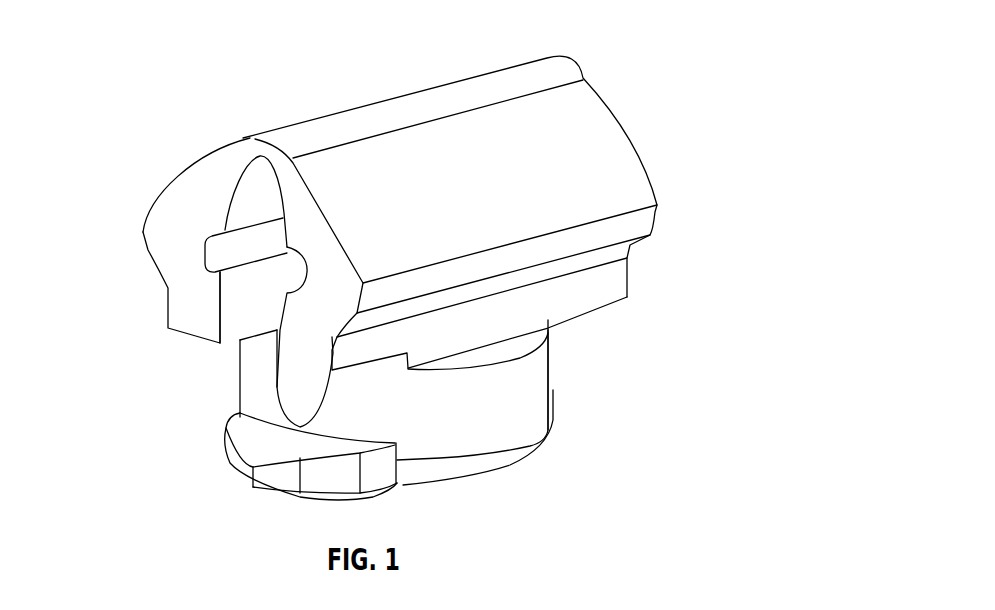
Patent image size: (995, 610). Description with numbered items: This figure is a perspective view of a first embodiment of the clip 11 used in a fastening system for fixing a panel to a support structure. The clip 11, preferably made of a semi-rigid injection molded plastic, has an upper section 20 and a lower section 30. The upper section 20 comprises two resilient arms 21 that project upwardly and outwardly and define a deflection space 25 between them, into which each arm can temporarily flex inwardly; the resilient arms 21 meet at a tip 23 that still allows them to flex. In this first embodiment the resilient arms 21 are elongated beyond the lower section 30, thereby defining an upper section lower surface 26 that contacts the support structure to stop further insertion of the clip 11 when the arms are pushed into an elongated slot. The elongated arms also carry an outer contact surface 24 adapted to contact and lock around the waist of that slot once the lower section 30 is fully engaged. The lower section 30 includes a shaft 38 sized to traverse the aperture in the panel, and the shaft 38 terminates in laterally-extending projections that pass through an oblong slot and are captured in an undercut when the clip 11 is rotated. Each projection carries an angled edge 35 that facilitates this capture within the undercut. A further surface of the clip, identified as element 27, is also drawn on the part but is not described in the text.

The clip 11 is at (652, 278).
The upper section 20 is at (620, 111).
The resilient arms 21 is at (207, 188).
The tip 23 is at (363, 127).
The outer contact surface 24 is at (630, 243).
The deflection space 25 is at (237, 258).
The upper section lower surface 26 is at (237, 342).
The lip 27 is at (530, 310).
The lower section 30 is at (548, 367).
The angled edge 35 is at (233, 437).
The shaft 38 is at (433, 402).